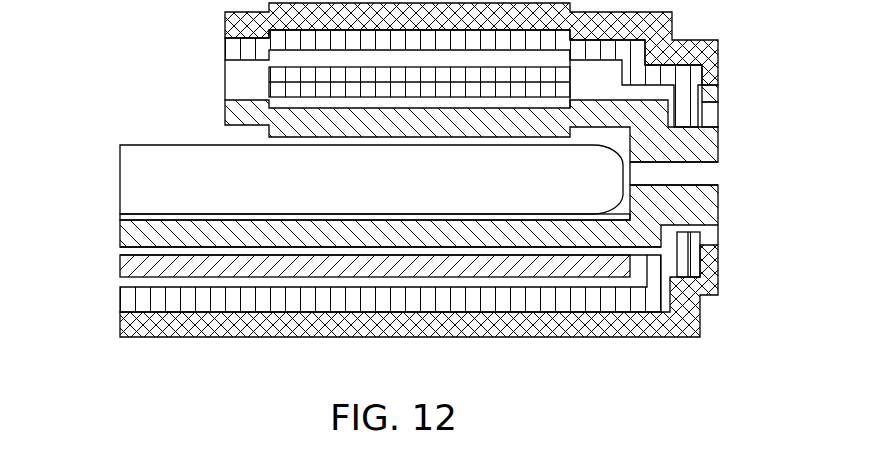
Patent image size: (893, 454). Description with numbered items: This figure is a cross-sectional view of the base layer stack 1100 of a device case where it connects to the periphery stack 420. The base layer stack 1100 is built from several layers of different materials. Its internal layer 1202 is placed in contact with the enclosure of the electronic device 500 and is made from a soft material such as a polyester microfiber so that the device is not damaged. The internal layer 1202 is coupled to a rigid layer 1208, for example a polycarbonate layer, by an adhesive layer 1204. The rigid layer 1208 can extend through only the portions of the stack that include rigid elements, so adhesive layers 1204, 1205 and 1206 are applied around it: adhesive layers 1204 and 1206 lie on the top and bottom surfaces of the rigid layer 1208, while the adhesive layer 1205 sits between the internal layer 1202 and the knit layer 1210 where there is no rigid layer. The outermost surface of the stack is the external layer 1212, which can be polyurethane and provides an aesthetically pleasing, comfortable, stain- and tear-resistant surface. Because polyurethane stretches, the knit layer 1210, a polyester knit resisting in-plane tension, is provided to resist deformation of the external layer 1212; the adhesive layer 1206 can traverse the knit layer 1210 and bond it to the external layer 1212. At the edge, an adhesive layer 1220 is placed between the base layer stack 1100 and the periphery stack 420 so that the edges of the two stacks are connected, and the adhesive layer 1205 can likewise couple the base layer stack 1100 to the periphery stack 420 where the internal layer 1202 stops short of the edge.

The periphery stack 420 is at (716, 44).
The electronic device 500 is at (150, 160).
The internal layer 1202 is at (127, 228).
The adhesive layer 1204 is at (127, 252).
The rigid layer 1208 is at (122, 263).
The adhesive layer 1206 is at (127, 282).
The knit layer 1210 is at (292, 306).
The external layer 1212 is at (173, 330).
The base layer stack 1100 is at (409, 323).
The adhesive layer 1220 is at (708, 173).
The adhesive layer 1205 is at (720, 220).